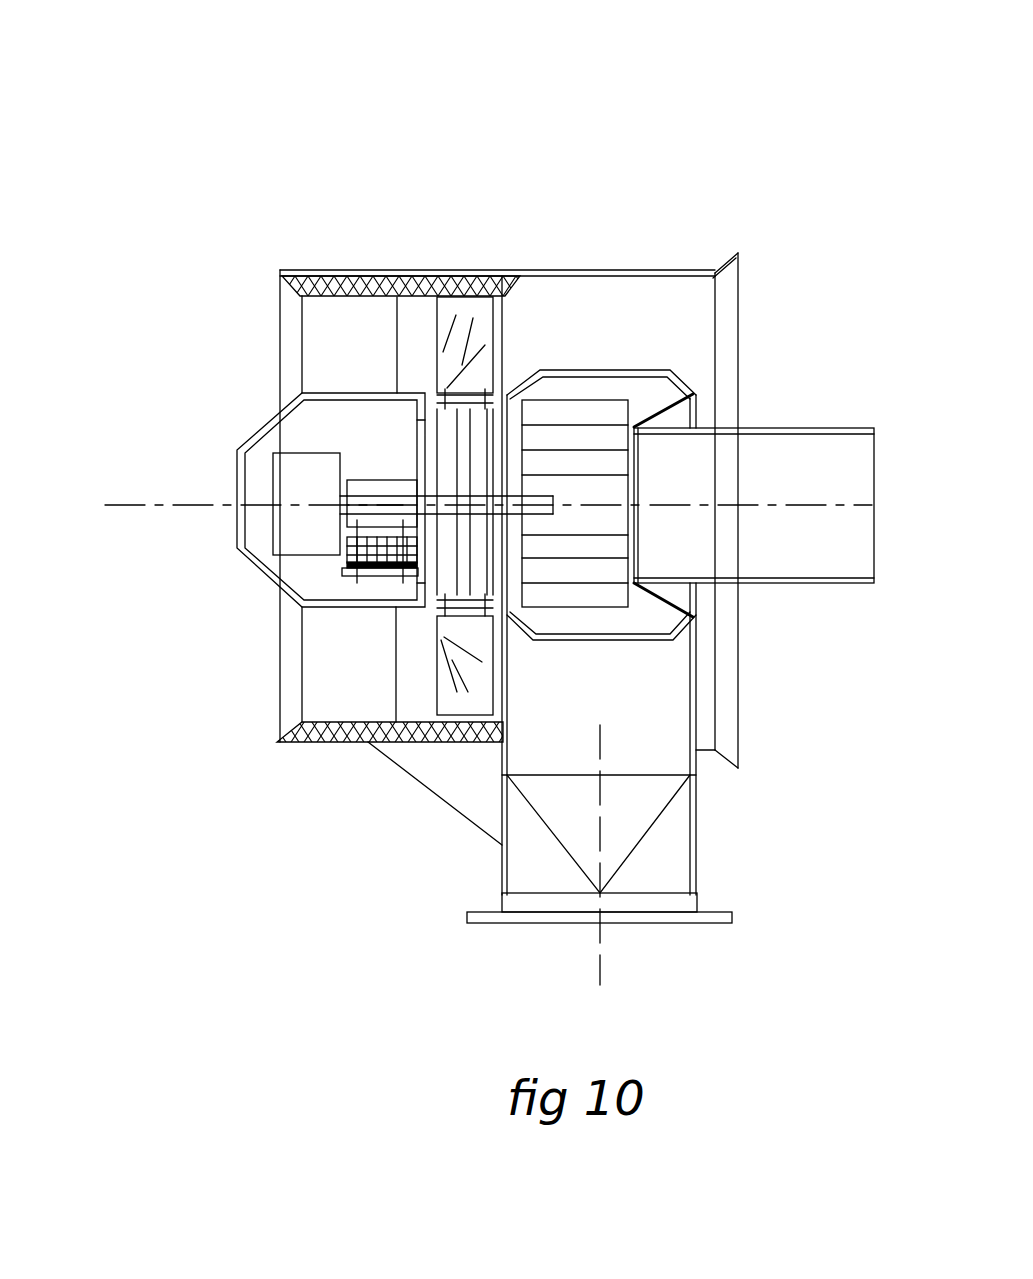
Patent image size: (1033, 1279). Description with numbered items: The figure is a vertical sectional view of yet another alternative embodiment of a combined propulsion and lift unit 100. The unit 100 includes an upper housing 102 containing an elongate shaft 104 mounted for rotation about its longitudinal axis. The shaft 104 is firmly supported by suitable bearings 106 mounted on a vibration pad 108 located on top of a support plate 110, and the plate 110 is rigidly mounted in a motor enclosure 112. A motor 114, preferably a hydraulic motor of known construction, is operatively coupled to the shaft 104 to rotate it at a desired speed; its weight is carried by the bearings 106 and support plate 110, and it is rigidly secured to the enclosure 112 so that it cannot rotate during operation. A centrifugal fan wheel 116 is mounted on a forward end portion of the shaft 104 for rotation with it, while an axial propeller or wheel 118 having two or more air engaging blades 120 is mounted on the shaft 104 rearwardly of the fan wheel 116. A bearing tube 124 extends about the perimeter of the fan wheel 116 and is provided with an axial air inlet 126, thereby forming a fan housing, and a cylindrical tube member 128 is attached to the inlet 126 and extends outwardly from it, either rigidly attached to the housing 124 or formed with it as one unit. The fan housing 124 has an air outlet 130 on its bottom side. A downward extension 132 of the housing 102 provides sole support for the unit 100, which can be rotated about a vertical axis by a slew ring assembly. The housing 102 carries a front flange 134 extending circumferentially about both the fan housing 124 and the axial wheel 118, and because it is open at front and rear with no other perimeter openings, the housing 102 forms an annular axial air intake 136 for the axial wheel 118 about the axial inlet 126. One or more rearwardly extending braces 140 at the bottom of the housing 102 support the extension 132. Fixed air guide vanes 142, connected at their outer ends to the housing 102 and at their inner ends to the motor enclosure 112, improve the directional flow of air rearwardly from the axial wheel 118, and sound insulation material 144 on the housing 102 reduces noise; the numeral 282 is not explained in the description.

The combined propulsion and lift unit 100 is at (561, 122).
The upper housing 102 is at (468, 271).
The elongate shaft 104 is at (518, 493).
The bearings 106 is at (405, 478).
The vibration pad 108 is at (335, 568).
The support plate 110 is at (386, 578).
The motor enclosure 112 is at (252, 424).
The motor 114 is at (290, 488).
The centrifugal fan wheel 116 is at (592, 612).
The axial propeller or wheel 118 is at (502, 348).
The air engaging blades 120 is at (433, 692).
The bearing tube 124 is at (689, 377).
The axial air inlet 126 is at (668, 522).
The cylindrical tube member 128 is at (838, 586).
The air outlet 130 is at (637, 791).
The downward extension 132 is at (698, 867).
The front flange 134 is at (747, 262).
The axial air intake 136 is at (695, 313).
The rearwardly extending braces 140 is at (455, 788).
The fixed air guide vanes 142 is at (323, 358).
The sound insulation material 144 is at (333, 278).
The lower compartment 282 is at (318, 708).